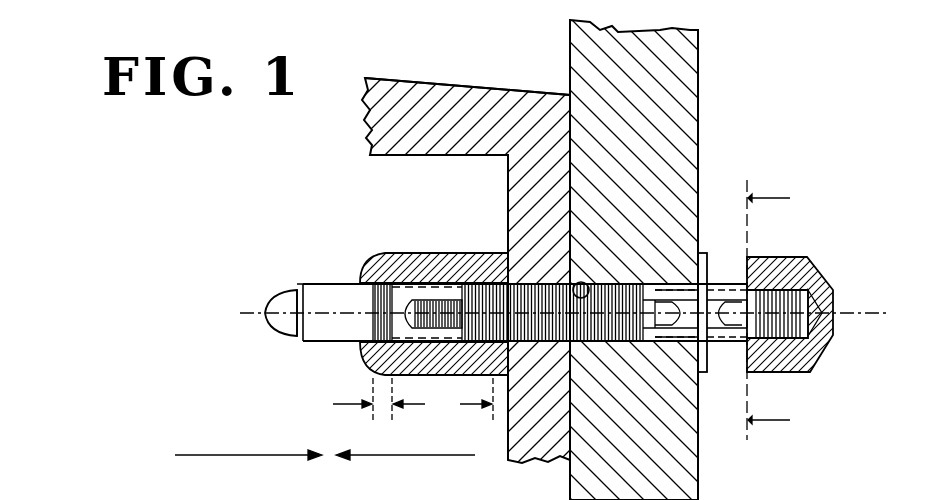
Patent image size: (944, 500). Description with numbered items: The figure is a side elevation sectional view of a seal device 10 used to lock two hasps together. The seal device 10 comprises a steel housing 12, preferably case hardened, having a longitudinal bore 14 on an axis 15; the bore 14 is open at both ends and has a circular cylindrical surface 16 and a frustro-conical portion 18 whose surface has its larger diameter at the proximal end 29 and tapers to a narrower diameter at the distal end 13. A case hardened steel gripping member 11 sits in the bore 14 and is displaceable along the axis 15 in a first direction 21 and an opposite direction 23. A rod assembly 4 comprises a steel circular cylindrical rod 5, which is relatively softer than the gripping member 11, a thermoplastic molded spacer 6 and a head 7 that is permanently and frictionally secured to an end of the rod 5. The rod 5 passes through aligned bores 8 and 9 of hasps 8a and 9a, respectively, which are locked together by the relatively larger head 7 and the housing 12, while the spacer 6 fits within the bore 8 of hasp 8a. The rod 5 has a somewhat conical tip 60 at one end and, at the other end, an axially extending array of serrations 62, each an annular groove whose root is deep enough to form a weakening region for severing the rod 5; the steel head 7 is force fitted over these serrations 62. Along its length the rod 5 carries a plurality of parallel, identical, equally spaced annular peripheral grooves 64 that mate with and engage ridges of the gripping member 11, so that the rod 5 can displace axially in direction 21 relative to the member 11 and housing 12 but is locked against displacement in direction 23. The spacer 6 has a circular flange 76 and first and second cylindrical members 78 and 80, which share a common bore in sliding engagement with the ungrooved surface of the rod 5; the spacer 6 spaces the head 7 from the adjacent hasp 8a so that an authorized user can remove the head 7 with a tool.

The rod assembly 4 is at (835, 262).
The rod 5 is at (318, 297).
The spacer 6 is at (727, 365).
The head 7 is at (583, 283).
The bore 8 is at (600, 340).
The hasp 8a is at (698, 80).
The bore 9 is at (528, 340).
The hasp 9a is at (468, 85).
The seal device 10 is at (305, 226).
The gripping member 11 is at (370, 335).
The housing 12 is at (420, 282).
The end 13 is at (512, 265).
The longitudinal bore 14 is at (400, 280).
The axis 15 is at (262, 311).
The circular cylindrical surface 16 is at (348, 399).
The frustro-conical portion 18 is at (443, 399).
The direction 21 is at (455, 456).
The direction 23 is at (230, 455).
The proximal end 29 is at (362, 288).
The conical tip 60 is at (268, 320).
The serrations 62 is at (812, 332).
The annular peripheral grooves 64 is at (528, 285).
The circular flange 76 is at (700, 255).
The first cylindrical member 78 is at (745, 262).
The second cylindrical member 80 is at (682, 280).